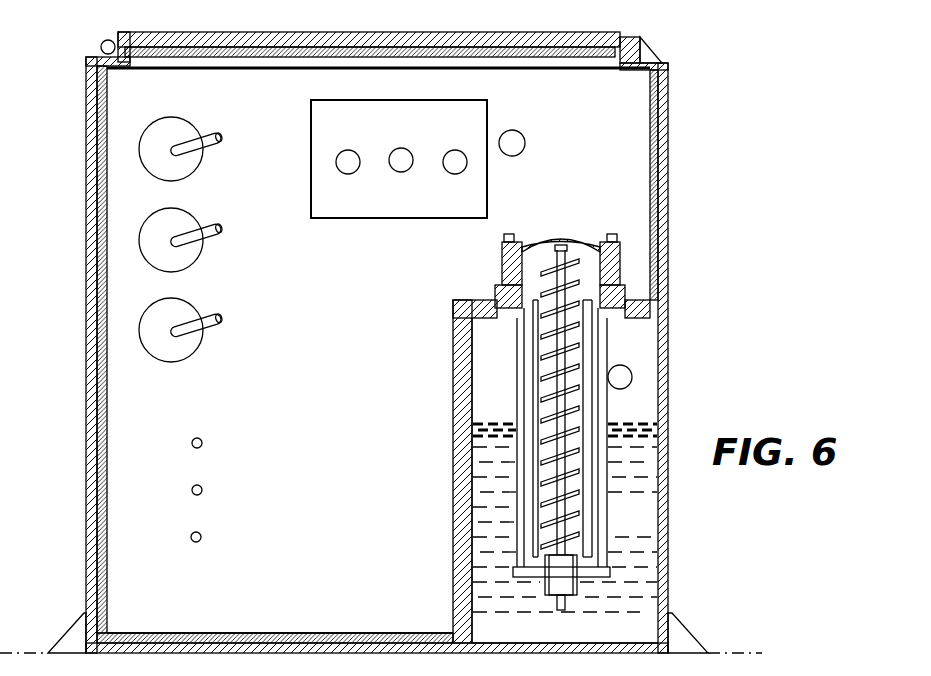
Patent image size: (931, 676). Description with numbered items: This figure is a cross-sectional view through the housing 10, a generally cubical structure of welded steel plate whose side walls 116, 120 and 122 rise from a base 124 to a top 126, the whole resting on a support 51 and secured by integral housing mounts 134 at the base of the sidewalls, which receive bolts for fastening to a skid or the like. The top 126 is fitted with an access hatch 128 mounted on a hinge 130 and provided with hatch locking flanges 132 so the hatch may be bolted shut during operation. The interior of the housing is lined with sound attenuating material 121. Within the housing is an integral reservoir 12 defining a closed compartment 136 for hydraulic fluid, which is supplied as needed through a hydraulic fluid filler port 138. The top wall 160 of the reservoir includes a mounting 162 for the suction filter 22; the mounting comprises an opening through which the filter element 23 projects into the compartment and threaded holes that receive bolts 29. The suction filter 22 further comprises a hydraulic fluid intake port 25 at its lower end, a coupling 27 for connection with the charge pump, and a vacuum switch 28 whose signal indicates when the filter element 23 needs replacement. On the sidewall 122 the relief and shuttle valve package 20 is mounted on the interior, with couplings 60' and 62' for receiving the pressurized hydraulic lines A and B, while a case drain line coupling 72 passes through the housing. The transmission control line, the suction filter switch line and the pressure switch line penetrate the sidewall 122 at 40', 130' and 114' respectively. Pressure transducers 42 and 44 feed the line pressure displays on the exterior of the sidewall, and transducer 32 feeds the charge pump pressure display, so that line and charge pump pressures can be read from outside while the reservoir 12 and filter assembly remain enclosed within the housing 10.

The housing 10 is at (86, 195).
The reservoir 12 is at (456, 508).
The relief and shuttle valve package 20 is at (414, 138).
The suction filter 22 is at (496, 440).
The filter element 23 is at (553, 515).
The hydraulic fluid intake port 25 is at (573, 606).
The coupling 27 is at (502, 268).
The vacuum switch 28 is at (620, 268).
The bolts 29 is at (612, 234).
The transducer 32 is at (194, 353).
The penetration of transmission control line 40' is at (223, 448).
The pressure transducer 42 is at (194, 172).
The pressure transducer 44 is at (194, 263).
The support 51 is at (742, 648).
The coupling 60' is at (441, 177).
The coupling 62' is at (361, 177).
The case drain line coupling 72 is at (525, 143).
The penetration of line 114 114' is at (227, 530).
The side wall 116 is at (670, 172).
The side wall 120 is at (88, 330).
The sound attenuating material 121 is at (96, 268).
The side wall 122 is at (372, 322).
The base 124 is at (410, 633).
The top 126 is at (92, 57).
The access hatch 128 is at (455, 33).
The hinge 130 is at (110, 29).
The penetration of line 30 130' is at (228, 493).
The hatch locking flanges 132 is at (655, 57).
The housing mounts 134 is at (64, 630).
The closed compartment 136 is at (654, 526).
The hydraulic fluid filler port 138 is at (632, 370).
The top wall 160 is at (492, 318).
The mounting 162 is at (488, 290).